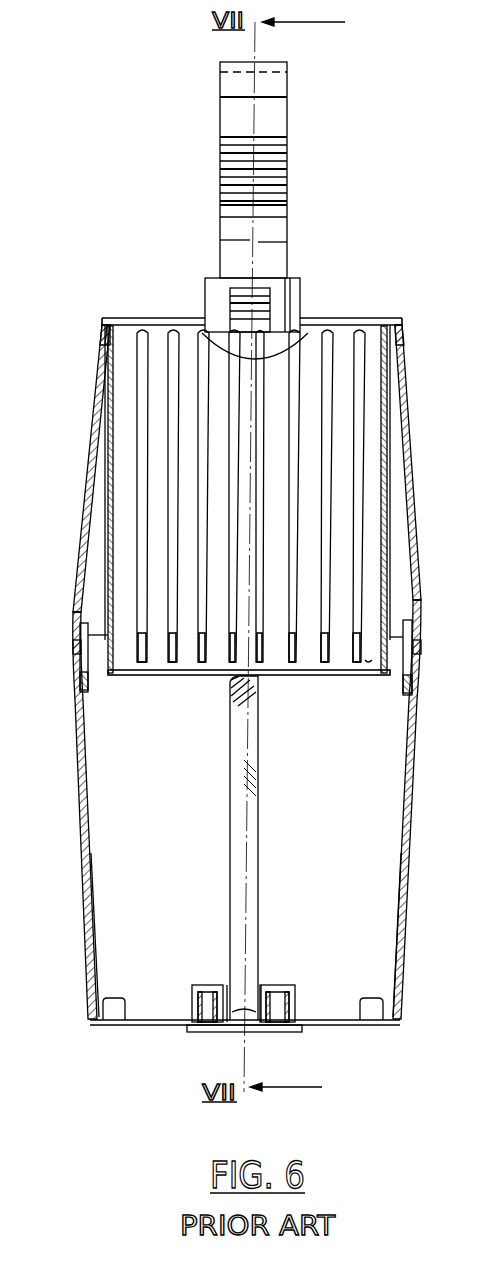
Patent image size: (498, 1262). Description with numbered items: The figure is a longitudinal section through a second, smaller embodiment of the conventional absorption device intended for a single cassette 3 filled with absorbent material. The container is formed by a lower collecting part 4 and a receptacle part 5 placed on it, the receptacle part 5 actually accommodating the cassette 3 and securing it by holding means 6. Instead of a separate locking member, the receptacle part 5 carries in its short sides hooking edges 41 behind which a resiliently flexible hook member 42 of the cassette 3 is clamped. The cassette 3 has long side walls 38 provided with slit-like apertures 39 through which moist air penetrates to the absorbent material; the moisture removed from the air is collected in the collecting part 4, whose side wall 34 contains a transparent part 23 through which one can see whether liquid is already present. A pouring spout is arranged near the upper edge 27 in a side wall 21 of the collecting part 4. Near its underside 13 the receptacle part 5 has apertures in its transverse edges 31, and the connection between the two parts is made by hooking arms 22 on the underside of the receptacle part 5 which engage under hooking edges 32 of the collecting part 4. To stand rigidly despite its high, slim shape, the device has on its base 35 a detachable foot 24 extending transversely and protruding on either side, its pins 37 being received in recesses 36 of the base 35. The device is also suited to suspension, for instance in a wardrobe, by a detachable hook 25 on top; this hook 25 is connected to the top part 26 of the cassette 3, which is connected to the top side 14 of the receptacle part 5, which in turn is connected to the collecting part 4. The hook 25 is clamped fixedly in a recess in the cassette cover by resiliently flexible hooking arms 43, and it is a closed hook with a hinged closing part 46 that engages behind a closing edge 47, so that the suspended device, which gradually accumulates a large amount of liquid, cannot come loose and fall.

The cassette 3 is at (314, 688).
The collecting part 4 is at (254, 812).
The receptacle part 5 is at (255, 468).
The holding means 6 is at (414, 362).
The underside 13 is at (288, 511).
The top side 14 is at (399, 318).
The side wall 21 is at (80, 829).
The hooking arms 22 is at (89, 672).
The transparent part 23 is at (258, 825).
The foot 24 is at (258, 1045).
The hook 25 is at (212, 184).
The top part 26 is at (302, 320).
The upper edge 27 is at (395, 648).
The transverse edges 31 is at (82, 519).
The hooking edges 32 is at (72, 652).
The side wall 34 is at (146, 885).
The base 35 is at (334, 1018).
The recesses 36 is at (200, 985).
The pins 37 is at (210, 1030).
The long side walls 38 is at (273, 676).
The slit-like apertures 39 is at (232, 675).
The hooking edges 41 is at (103, 357).
The hook member 42 is at (101, 342).
The hooking arms 43 is at (258, 318).
The closing part 46 is at (280, 135).
The closing edge 47 is at (288, 204).